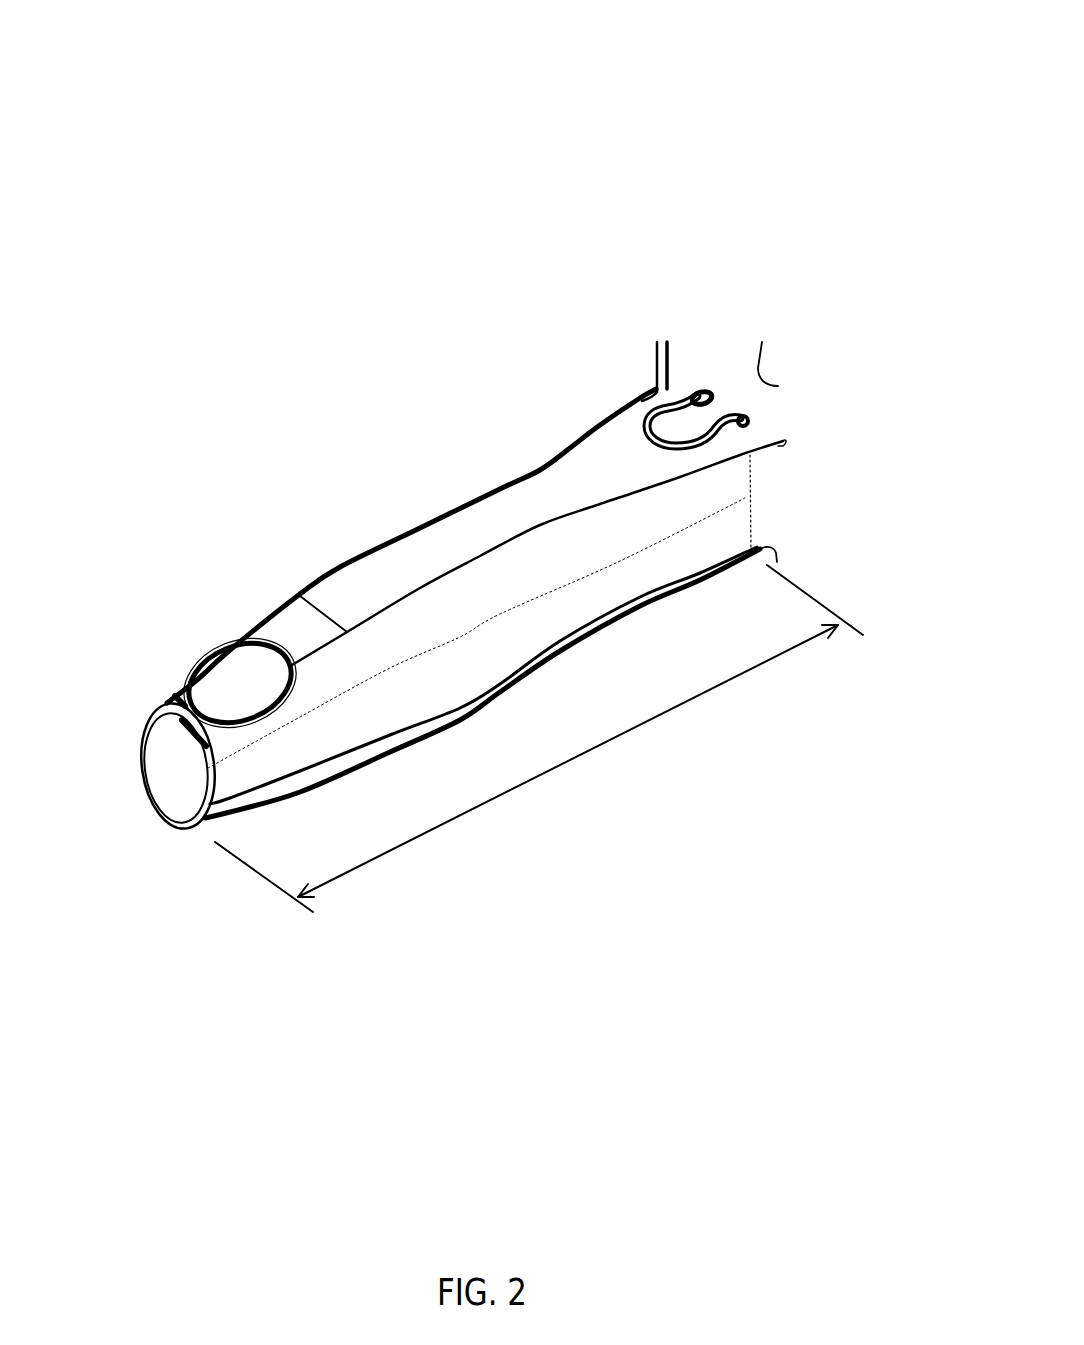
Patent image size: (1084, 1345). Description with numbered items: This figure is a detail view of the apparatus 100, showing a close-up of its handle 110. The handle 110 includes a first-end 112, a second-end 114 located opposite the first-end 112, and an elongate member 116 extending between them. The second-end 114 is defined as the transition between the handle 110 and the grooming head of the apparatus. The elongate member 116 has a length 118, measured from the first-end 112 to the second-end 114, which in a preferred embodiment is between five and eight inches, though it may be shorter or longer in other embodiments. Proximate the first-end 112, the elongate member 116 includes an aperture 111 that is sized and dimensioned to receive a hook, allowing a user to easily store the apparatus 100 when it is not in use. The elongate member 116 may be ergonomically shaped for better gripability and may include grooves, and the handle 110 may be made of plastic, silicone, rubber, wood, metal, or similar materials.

The apparatus 100 is at (846, 49).
The handle 110 is at (510, 540).
The aperture 111 is at (233, 683).
The first-end 112 is at (165, 755).
The second-end 114 is at (657, 408).
The elongate member 116 is at (304, 592).
The length 118 is at (587, 750).